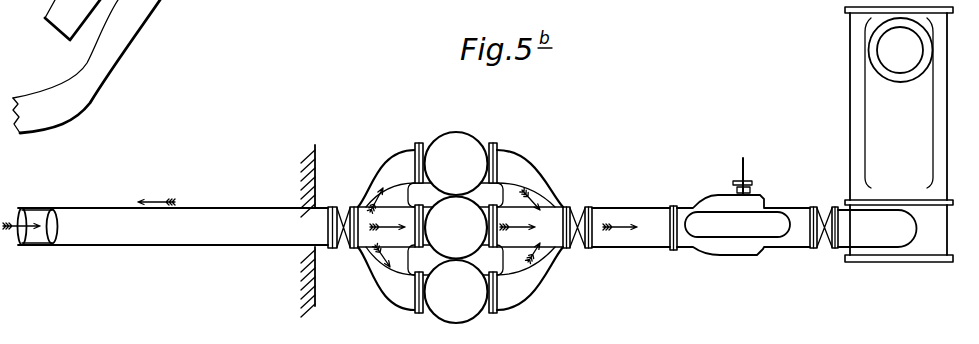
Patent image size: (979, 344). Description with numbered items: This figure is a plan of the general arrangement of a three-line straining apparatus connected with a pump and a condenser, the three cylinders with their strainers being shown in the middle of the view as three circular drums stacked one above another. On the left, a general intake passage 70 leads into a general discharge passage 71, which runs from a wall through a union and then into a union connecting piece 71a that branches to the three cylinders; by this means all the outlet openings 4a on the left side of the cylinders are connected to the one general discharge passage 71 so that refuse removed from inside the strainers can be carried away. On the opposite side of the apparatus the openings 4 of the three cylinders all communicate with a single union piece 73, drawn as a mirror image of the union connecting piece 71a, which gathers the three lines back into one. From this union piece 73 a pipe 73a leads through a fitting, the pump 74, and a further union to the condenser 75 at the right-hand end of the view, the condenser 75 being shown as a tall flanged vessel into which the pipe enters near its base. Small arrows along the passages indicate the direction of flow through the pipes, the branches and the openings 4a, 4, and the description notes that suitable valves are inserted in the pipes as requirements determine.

The general intake passage 70 is at (40, 208).
The general discharge passage 71 is at (213, 217).
The union connecting piece 71a is at (376, 270).
The discharge opening 4 is at (493, 158).
The discharge opening 4a is at (390, 318).
The union piece 73 is at (538, 270).
The pipe 73a is at (623, 218).
The pump 74 is at (755, 205).
The condenser 75 is at (883, 103).